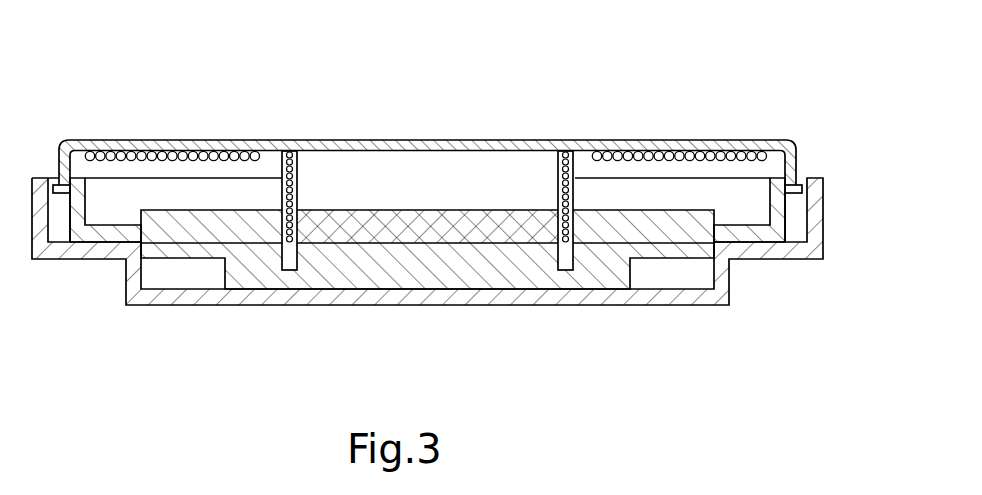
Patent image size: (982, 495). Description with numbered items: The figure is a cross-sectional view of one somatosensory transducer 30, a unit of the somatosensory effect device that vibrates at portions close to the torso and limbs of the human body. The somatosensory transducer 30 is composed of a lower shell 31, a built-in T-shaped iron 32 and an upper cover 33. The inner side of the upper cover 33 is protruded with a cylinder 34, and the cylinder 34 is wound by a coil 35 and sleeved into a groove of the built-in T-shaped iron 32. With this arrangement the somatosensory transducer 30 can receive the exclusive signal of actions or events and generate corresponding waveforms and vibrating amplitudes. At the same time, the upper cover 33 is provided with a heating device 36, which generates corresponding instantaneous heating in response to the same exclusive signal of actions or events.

The somatosensory transducer 30 is at (449, 201).
The lower shell 31 is at (456, 300).
The built-in T-shaped iron 32 is at (412, 222).
The upper cover 33 is at (327, 140).
The cylinder 34 is at (558, 165).
The coil 35 is at (578, 198).
The heating device 36 is at (142, 150).